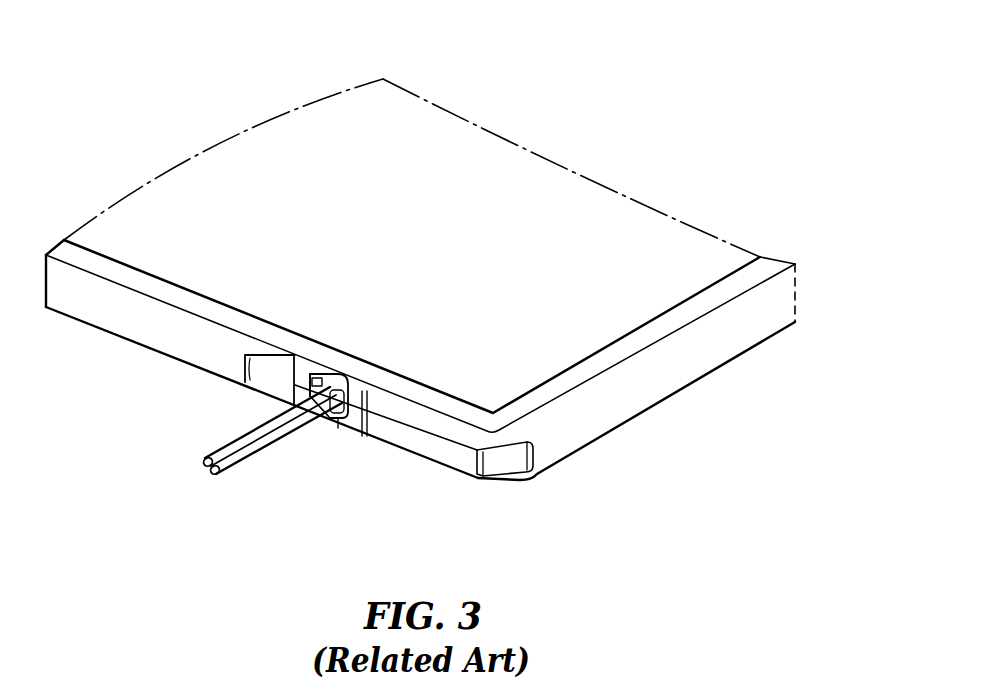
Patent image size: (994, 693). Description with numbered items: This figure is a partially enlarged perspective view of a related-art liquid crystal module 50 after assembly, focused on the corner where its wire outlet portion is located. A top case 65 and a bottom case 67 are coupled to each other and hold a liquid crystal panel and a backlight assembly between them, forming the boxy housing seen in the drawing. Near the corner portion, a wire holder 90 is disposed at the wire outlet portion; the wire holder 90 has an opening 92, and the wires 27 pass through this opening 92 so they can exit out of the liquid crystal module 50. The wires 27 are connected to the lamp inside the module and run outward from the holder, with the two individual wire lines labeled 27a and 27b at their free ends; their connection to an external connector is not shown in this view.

The liquid crystal module 50 is at (420, 315).
The top case 65 is at (362, 372).
The bottom case 67 is at (443, 455).
The wire holder 90 is at (325, 401).
The opening 92 is at (316, 372).
The wires 27 is at (261, 481).
The first cable line 27a is at (208, 471).
The second cable line 27b is at (227, 474).